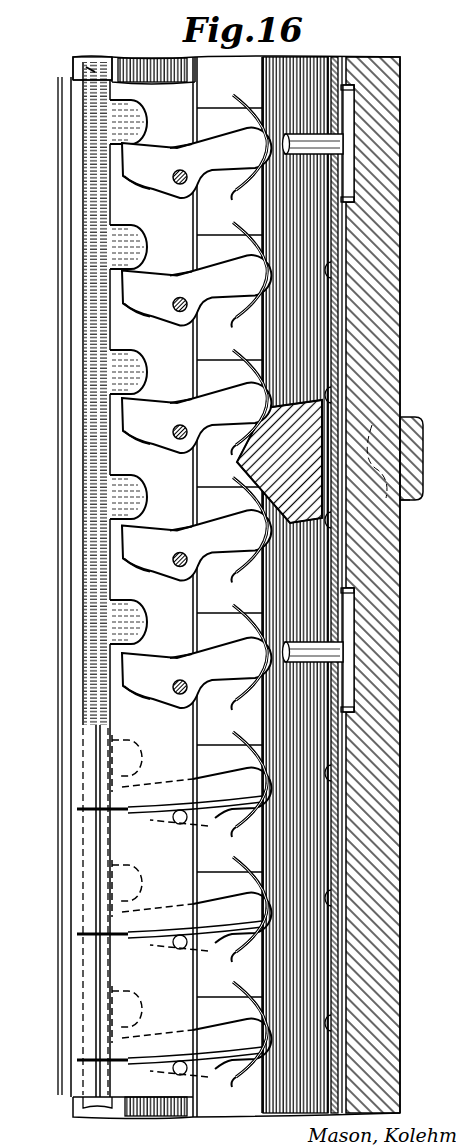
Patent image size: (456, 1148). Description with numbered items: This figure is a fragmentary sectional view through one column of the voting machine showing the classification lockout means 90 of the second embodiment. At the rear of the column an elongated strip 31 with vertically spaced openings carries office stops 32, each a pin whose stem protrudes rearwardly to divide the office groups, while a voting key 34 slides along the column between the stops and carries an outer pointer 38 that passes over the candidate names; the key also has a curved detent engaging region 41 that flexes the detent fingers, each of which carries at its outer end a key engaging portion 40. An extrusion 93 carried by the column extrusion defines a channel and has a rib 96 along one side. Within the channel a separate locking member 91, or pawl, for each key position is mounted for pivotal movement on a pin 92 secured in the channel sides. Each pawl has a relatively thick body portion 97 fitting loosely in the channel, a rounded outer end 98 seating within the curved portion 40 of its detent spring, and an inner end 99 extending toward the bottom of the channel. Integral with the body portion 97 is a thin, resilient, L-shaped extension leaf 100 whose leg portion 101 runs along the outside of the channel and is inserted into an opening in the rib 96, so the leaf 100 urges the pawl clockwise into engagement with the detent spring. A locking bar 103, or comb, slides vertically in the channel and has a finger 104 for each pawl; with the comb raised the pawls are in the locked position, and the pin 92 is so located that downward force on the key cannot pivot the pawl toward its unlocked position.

The elongated strip 31 is at (333, 308).
The office stop 32 is at (300, 144).
The voting key 34 is at (420, 421).
The pointer 38 is at (410, 517).
The key engaging portion 40 is at (236, 92).
The curved detent engaging region 41 is at (256, 464).
The classification lockout means 90 is at (170, 58).
The locking member 91 is at (220, 133).
The pin 92 is at (176, 185).
The extrusion 93 is at (117, 80).
The rib 96 is at (98, 750).
The body portion 97 is at (181, 151).
The rounded outer end 98 is at (258, 132).
The inner end 99 is at (138, 183).
The extension leaf 100 is at (137, 812).
The leg portion 101 is at (78, 809).
The locking bar 103 is at (88, 69).
The finger 104 is at (133, 112).